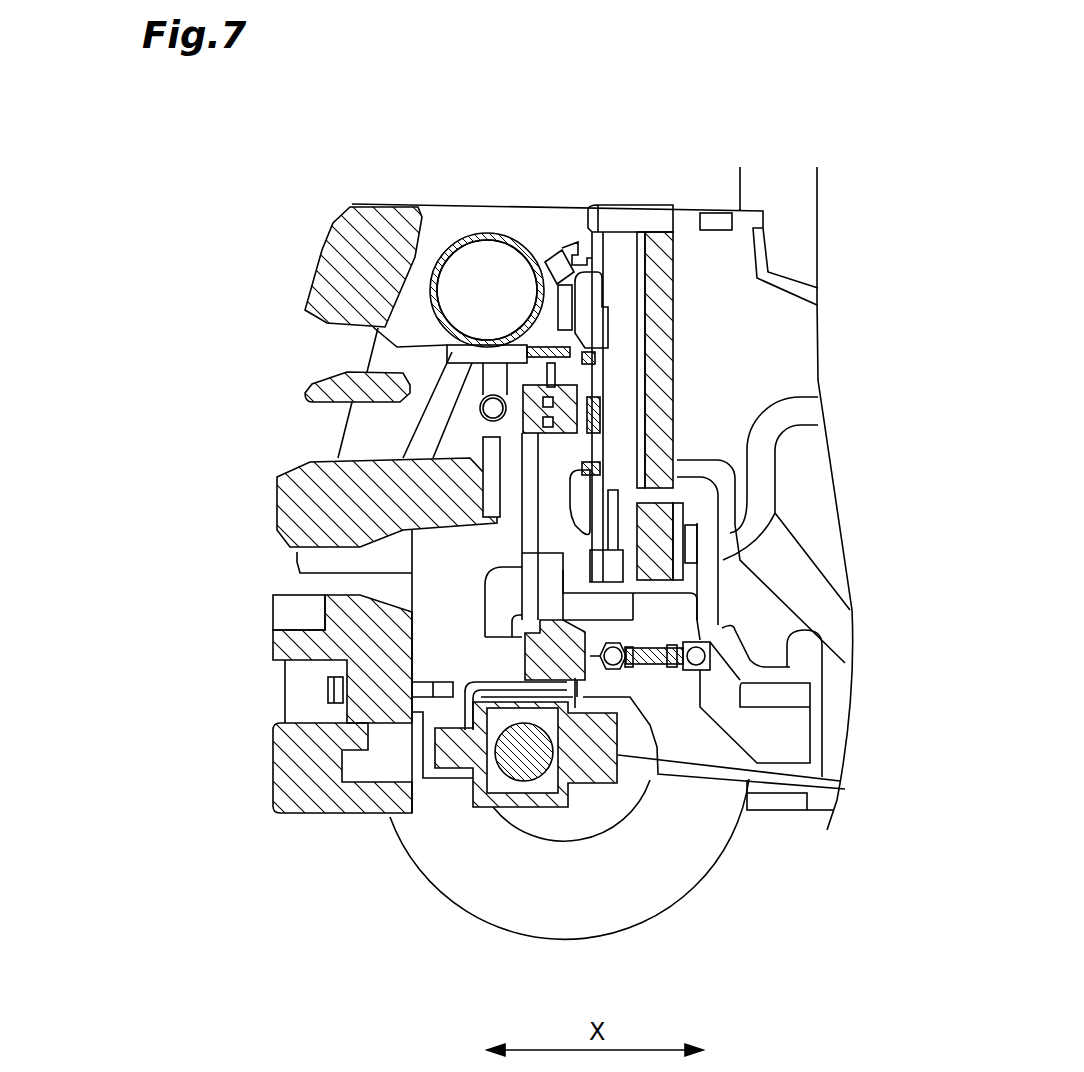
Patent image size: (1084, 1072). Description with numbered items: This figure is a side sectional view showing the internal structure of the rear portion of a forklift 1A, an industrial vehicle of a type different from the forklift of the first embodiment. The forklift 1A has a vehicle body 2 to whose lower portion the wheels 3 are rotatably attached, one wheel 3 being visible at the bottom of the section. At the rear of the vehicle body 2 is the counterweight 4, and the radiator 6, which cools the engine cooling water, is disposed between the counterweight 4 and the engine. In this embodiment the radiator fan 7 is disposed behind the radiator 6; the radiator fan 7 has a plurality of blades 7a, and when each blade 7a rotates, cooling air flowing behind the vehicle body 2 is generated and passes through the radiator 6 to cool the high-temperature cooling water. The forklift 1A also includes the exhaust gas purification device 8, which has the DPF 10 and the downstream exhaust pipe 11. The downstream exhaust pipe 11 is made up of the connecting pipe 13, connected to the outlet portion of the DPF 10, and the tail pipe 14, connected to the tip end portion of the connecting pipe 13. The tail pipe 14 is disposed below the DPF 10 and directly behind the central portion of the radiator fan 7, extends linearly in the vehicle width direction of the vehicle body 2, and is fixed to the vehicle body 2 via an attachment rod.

The forklift 1A is at (675, 90).
The vehicle body 2 is at (559, 200).
The wheel 3 is at (690, 868).
The counterweight 4 is at (385, 226).
The radiator 6 is at (656, 250).
The radiator fan 7 is at (610, 483).
The blade 7a is at (588, 290).
The exhaust gas purification device 8 is at (468, 224).
The DPF 10 is at (497, 232).
The downstream exhaust pipe 11 is at (470, 404).
The connecting pipe 13 is at (488, 385).
The tail pipe 14 is at (483, 423).